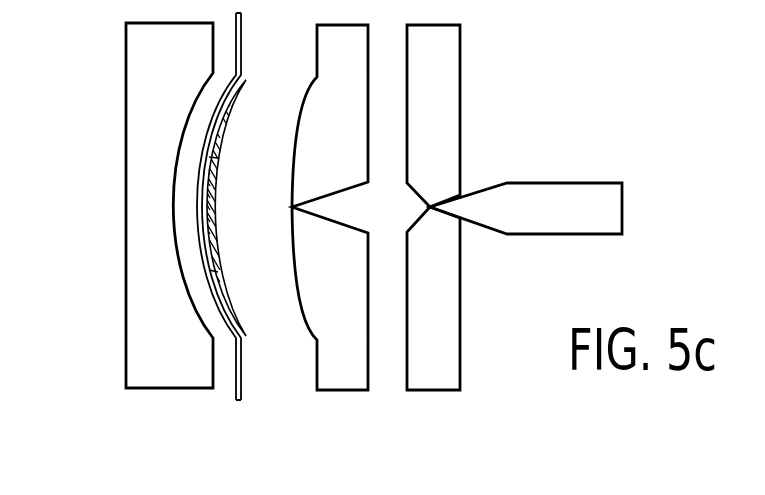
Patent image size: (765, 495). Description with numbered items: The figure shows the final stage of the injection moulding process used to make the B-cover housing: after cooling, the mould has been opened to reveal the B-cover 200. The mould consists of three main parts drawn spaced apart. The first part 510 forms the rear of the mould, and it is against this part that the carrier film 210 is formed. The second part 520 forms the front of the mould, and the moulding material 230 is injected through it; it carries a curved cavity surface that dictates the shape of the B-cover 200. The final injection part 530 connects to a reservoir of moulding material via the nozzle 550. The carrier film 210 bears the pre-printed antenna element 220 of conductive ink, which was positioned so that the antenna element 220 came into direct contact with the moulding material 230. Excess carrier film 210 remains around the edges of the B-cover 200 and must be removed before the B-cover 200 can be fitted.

The first part 510 is at (126, 297).
The carrier film 210 is at (243, 395).
The B-cover 200 is at (222, 220).
The antenna element 220 is at (218, 157).
The moulding material 230 is at (216, 271).
The second part 520 is at (348, 390).
The final injection part 530 is at (442, 392).
The nozzle 550 is at (587, 183).